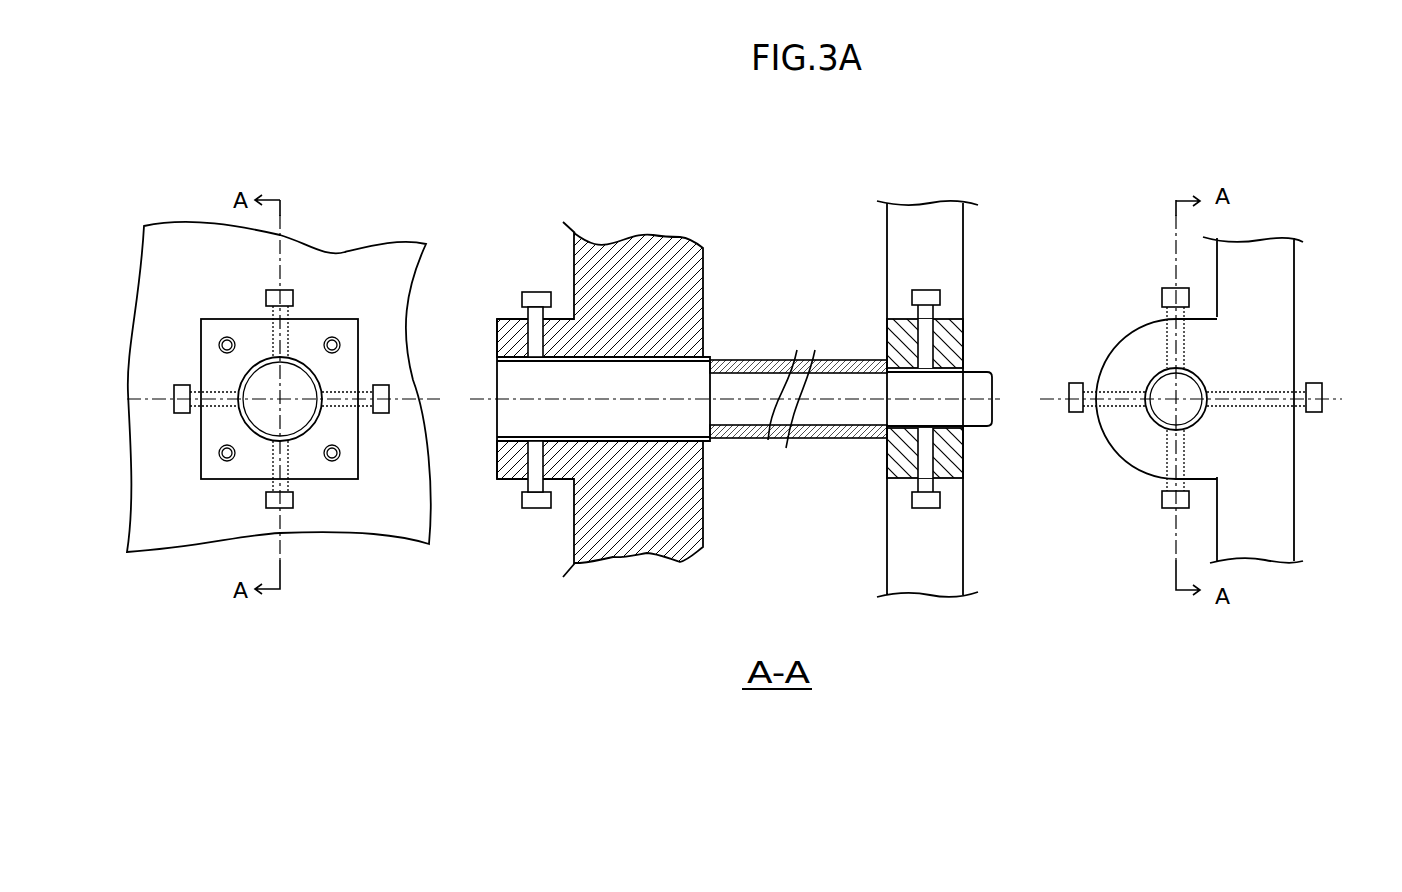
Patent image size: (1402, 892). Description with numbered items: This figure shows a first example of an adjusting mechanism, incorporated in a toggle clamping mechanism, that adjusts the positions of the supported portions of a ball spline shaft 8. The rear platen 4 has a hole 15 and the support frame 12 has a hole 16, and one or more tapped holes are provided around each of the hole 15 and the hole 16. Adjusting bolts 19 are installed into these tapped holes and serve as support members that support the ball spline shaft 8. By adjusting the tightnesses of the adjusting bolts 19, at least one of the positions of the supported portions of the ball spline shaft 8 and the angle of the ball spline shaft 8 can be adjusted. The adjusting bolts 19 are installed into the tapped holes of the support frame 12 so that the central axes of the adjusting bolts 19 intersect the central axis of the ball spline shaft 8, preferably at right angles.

The rear platen 4 is at (402, 530).
The ball spline shaft 8 is at (977, 372).
The support frame 12 is at (943, 245).
The hole of the rear platen 15 is at (683, 345).
The hole of the support frame 16 is at (893, 353).
The adjusting bolts 19 is at (293, 297).